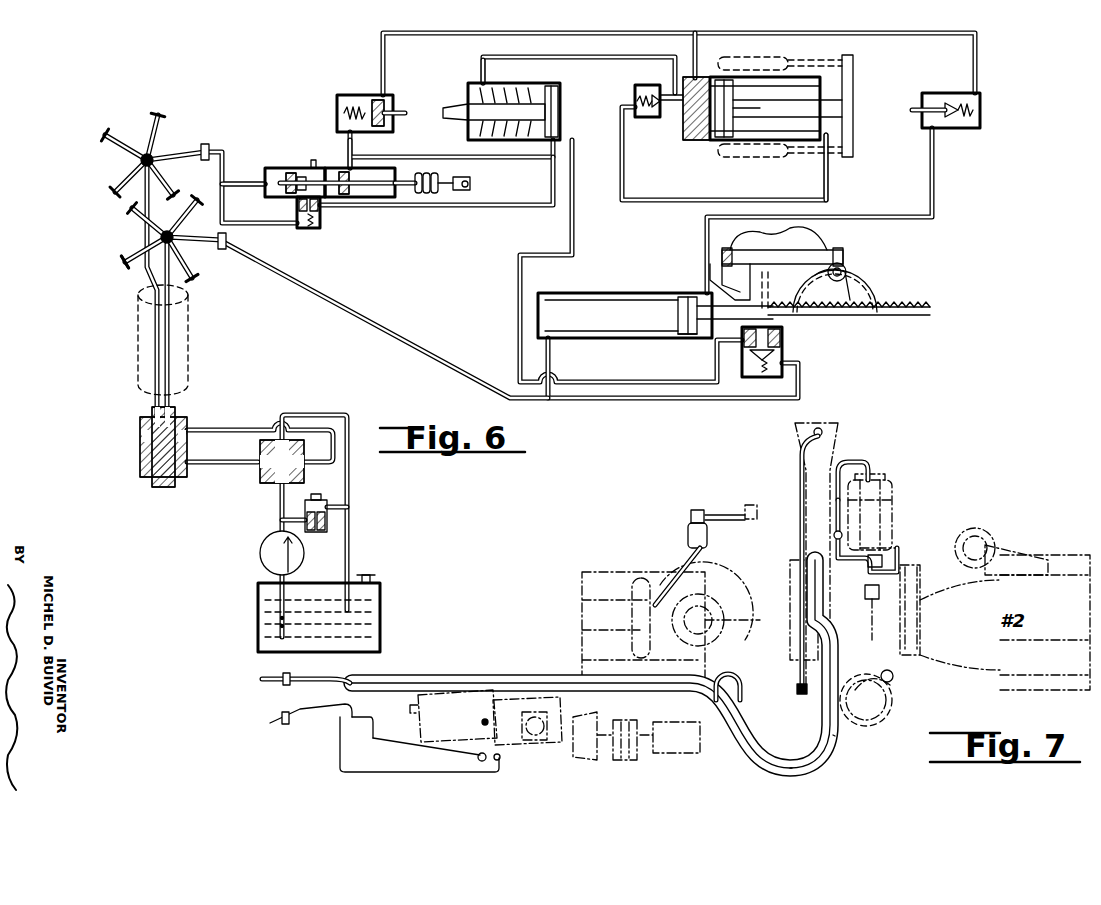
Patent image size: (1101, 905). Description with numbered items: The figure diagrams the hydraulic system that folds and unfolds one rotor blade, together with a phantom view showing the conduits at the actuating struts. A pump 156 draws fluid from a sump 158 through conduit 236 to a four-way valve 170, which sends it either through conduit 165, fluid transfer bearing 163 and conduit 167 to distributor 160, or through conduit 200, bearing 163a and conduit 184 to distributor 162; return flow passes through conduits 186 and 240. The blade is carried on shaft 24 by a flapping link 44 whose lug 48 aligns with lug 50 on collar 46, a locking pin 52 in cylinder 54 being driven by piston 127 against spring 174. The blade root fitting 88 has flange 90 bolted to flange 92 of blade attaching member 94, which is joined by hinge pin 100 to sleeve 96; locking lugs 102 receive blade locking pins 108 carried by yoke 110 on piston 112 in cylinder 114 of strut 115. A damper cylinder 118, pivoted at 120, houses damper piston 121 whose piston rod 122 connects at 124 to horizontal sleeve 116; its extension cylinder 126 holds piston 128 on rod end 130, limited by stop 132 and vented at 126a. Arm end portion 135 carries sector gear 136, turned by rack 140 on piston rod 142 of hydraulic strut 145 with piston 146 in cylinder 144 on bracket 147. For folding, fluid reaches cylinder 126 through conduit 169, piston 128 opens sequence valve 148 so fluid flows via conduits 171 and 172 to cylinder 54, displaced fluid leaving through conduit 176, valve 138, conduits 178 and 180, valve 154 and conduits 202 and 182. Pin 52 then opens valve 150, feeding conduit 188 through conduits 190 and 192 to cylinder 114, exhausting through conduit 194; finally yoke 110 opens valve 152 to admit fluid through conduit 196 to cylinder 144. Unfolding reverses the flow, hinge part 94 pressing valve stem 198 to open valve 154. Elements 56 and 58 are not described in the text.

In FIG. 6, the shaft 24 is at (135, 333).
In FIG. 7, the flapping link 44 is at (700, 550).
In FIG. 7, the collar 46 is at (833, 746).
In FIG. 7, the lug 48 is at (795, 766).
In FIG. 7, the lug 50 is at (845, 736).
In FIG. 6, the locking pin 52 is at (455, 105).
In FIG. 6, the cylinder 54 is at (495, 88).
In FIG. 7, the cylinder 54 is at (856, 718).
In FIG. 7, the fitting 56 is at (758, 510).
In FIG. 7, the hub 58 is at (705, 512).
In FIG. 6, the fitting 88 is at (706, 236).
In FIG. 7, the fitting 88 is at (962, 545).
In FIG. 7, the annular flange 90 is at (900, 576).
In FIG. 7, the flange 92 is at (900, 560).
In FIG. 6, the blade attaching member 94 is at (745, 255).
In FIG. 7, the blade attaching member 94 is at (880, 548).
In FIG. 6, the sleeve 96 is at (725, 286).
In FIG. 7, the sleeve 96 is at (815, 561).
In FIG. 6, the hinge pin 100 is at (842, 270).
In FIG. 7, the hinge pin 100 is at (893, 683).
In FIG. 6, the locking lugs 102 is at (730, 268).
In FIG. 6, the blade locking pins 108 is at (775, 57).
In FIG. 6, the yoke 110 is at (853, 70).
In FIG. 6, the piston 112 is at (720, 135).
In FIG. 7, the piston 112 is at (895, 490).
In FIG. 6, the cylinder 114 is at (690, 140).
In FIG. 6, the strut 115 is at (721, 64).
In FIG. 7, the strut 115 is at (904, 481).
In FIG. 7, the horizontal sleeve 116 is at (680, 722).
In FIG. 6, the damper cylinder 118 is at (352, 158).
In FIG. 7, the damper cylinder 118 is at (525, 705).
In FIG. 7, the pivot 120 is at (560, 710).
In FIG. 6, the damper piston 121 is at (380, 186).
In FIG. 6, the piston rod 122 is at (425, 194).
In FIG. 7, the piston rod 122 is at (605, 760).
In FIG. 6, the pivotal connection 124 is at (470, 184).
In FIG. 7, the pivotal connection 124 is at (690, 755).
In FIG. 6, the extension cylinder 126 is at (298, 168).
In FIG. 7, the extension cylinder 126 is at (470, 700).
In FIG. 6, the vent 126a is at (315, 165).
In FIG. 6, the piston 127 is at (558, 95).
In FIG. 6, the piston 128 is at (282, 168).
In FIG. 6, the end of piston rod 130 is at (289, 200).
In FIG. 6, the stop 132 is at (296, 170).
In FIG. 7, the end portion 135 is at (898, 696).
In FIG. 6, the sector gear 136 is at (870, 286).
In FIG. 6, the sequence valve 138 is at (637, 98).
In FIG. 7, the sequence valve 138 is at (845, 532).
In FIG. 6, the rack 140 is at (900, 316).
In FIG. 6, the piston rod 142 is at (728, 318).
In FIG. 6, the cylinder 144 is at (628, 293).
In FIG. 6, the hydraulic strut 145 is at (530, 304).
In FIG. 7, the hydraulic strut 145 is at (843, 459).
In FIG. 6, the piston 146 is at (680, 340).
In FIG. 7, the bracket 147 is at (800, 538).
In FIG. 6, the sequence valve 148 is at (320, 216).
In FIG. 7, the sequence valve 148 is at (460, 751).
In FIG. 6, the sequence valve 150 is at (357, 95).
In FIG. 7, the sequence valve 150 is at (735, 752).
In FIG. 6, the sequence valve 152 is at (945, 130).
In FIG. 7, the sequence valve 152 is at (878, 480).
In FIG. 6, the sequence valve 154 is at (782, 346).
In FIG. 7, the sequence valve 154 is at (872, 594).
In FIG. 6, the pump 156 is at (260, 553).
In FIG. 6, the sump 158 is at (258, 610).
In FIG. 6, the distributor 160 is at (140, 165).
In FIG. 6, the distributor 162 is at (121, 262).
In FIG. 6, the fluid transfer bearing 163 is at (140, 425).
In FIG. 6, the fluid transfer bearing 163a is at (142, 456).
In FIG. 6, the conduit 165 is at (215, 428).
In FIG. 6, the conduit 167 is at (160, 238).
In FIG. 6, the conduit 169 is at (224, 152).
In FIG. 7, the conduit 169 is at (325, 716).
In FIG. 6, the four-way valve 170 is at (262, 478).
In FIG. 6, the conduit 171 is at (272, 200).
In FIG. 6, the conduit 172 is at (480, 207).
In FIG. 6, the spring 174 is at (490, 52).
In FIG. 6, the conduit 176 is at (522, 57).
In FIG. 6, the conduit 178 is at (622, 175).
In FIG. 6, the conduit 180 is at (518, 332).
In FIG. 6, the conduit 182 is at (405, 343).
In FIG. 7, the conduit 182 is at (295, 722).
In FIG. 6, the conduit 184 is at (170, 330).
In FIG. 6, the conduit 186 is at (318, 415).
In FIG. 6, the conduit 188 is at (450, 155).
In FIG. 6, the conduit 190 is at (435, 33).
In FIG. 6, the conduit 192 is at (690, 38).
In FIG. 6, the conduit 194 is at (827, 173).
In FIG. 6, the conduit 196 is at (933, 226).
In FIG. 6, the valve stem 198 is at (775, 316).
In FIG. 6, the conduit 200 is at (212, 466).
In FIG. 6, the conduit 202 is at (800, 387).
In FIG. 6, the conduit 236 is at (282, 518).
In FIG. 6, the conduit 240 is at (350, 574).